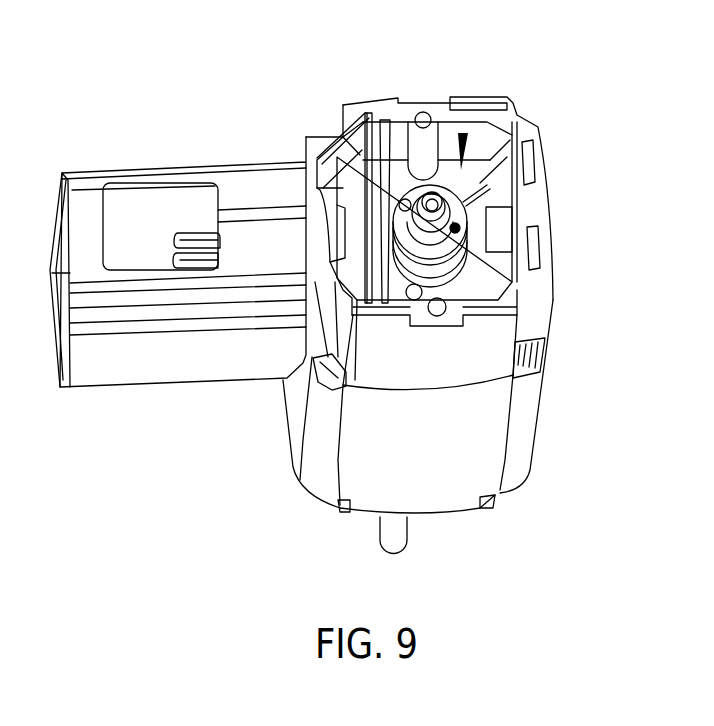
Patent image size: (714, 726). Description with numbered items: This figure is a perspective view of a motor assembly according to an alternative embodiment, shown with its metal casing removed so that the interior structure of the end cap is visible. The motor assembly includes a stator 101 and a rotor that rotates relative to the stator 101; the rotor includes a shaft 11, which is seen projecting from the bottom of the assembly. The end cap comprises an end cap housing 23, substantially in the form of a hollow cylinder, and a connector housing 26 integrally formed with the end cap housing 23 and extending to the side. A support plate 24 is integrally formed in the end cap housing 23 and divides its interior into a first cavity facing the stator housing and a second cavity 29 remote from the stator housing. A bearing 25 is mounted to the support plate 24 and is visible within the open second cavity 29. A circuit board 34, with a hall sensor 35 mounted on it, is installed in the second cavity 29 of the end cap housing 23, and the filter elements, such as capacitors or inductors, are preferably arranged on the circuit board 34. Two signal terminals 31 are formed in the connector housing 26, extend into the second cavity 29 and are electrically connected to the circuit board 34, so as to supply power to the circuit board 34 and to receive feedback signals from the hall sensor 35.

The shaft 11 is at (385, 535).
The end cap housing 23 is at (550, 212).
The support plate 24 is at (507, 100).
The bearing 25 is at (465, 272).
The connector housing 26 is at (135, 357).
The second cavity 29 is at (473, 178).
The signal terminals 31 is at (193, 233).
The circuit board 34 is at (332, 137).
The hall sensor 35 is at (390, 110).
The stator 101 is at (497, 422).